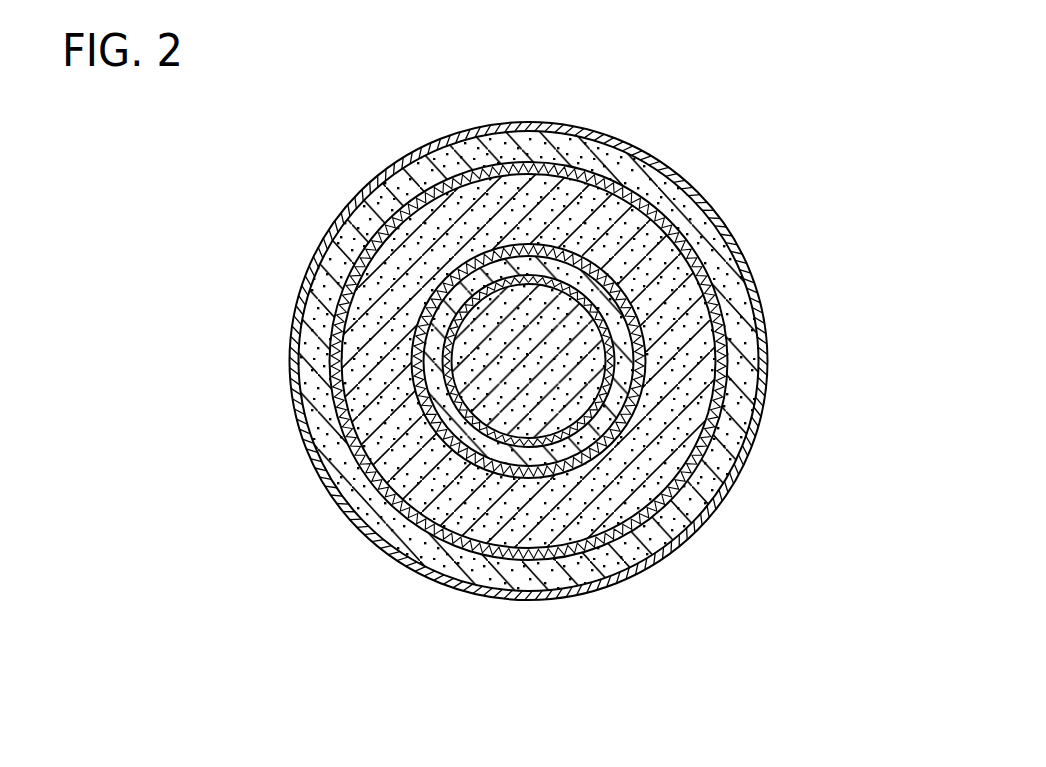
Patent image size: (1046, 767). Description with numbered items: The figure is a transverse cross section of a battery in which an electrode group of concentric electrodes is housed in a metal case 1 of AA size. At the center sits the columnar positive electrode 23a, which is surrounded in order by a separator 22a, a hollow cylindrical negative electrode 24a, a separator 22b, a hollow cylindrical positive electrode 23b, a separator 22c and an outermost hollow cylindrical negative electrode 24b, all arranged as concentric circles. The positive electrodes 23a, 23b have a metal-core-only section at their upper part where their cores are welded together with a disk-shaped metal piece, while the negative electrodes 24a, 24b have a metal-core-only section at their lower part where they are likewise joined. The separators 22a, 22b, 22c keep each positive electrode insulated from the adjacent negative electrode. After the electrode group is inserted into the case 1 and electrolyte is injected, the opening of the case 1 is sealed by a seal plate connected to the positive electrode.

The metal case 1 is at (697, 195).
The separator 22a is at (560, 287).
The separator 22b is at (640, 337).
The separator 22c is at (353, 460).
The columnar positive electrode 23a is at (563, 397).
The hollow cylindrical positive electrode 23b is at (593, 498).
The hollow cylindrical negative electrode 24a is at (435, 312).
The hollow cylindrical negative electrode 24b is at (430, 173).